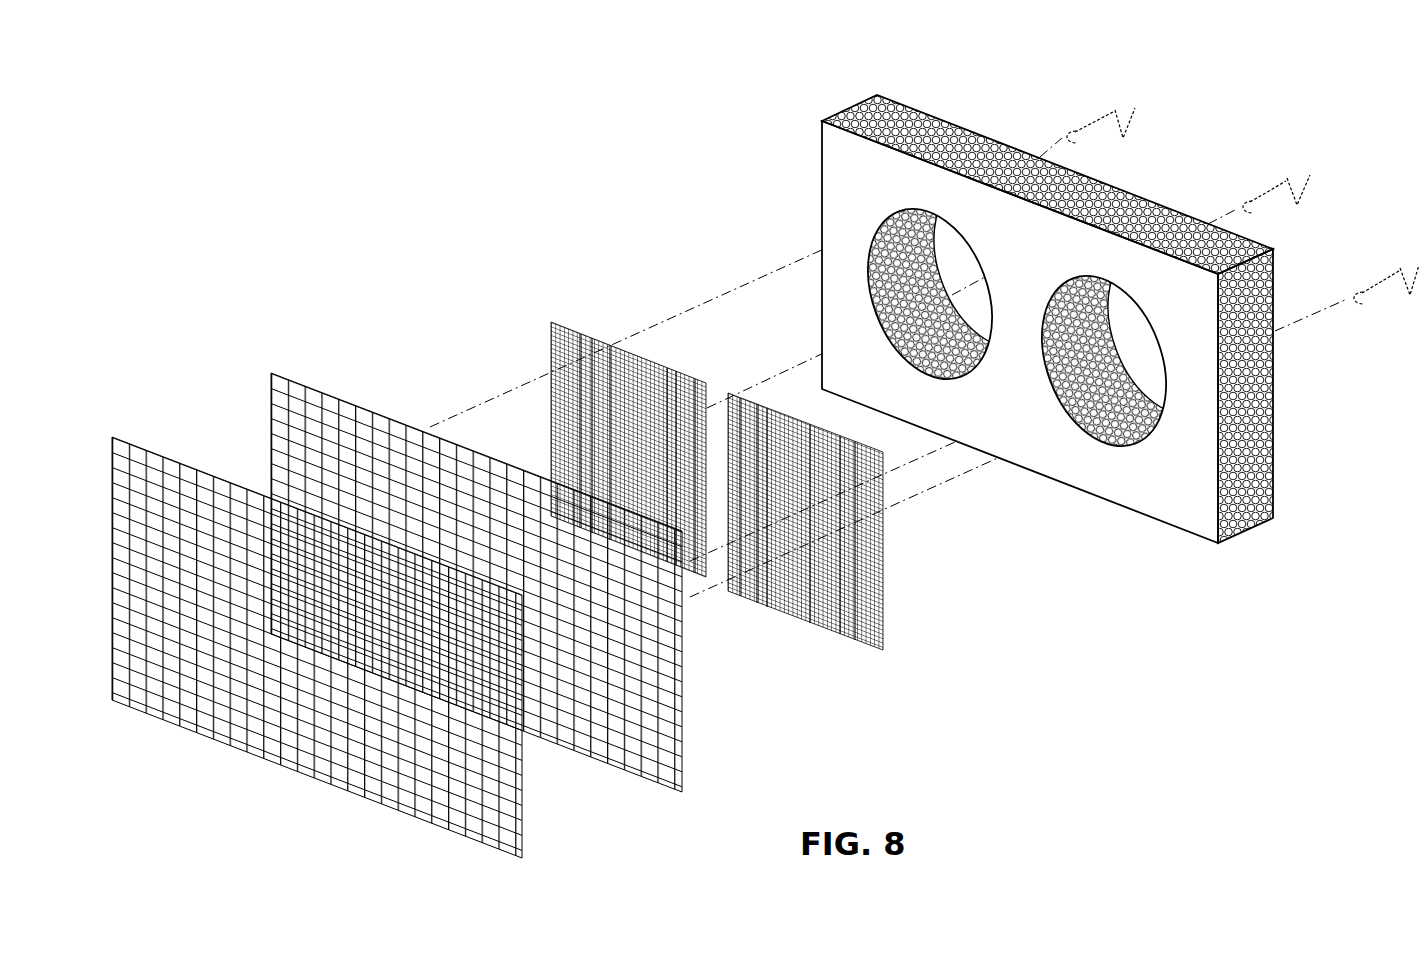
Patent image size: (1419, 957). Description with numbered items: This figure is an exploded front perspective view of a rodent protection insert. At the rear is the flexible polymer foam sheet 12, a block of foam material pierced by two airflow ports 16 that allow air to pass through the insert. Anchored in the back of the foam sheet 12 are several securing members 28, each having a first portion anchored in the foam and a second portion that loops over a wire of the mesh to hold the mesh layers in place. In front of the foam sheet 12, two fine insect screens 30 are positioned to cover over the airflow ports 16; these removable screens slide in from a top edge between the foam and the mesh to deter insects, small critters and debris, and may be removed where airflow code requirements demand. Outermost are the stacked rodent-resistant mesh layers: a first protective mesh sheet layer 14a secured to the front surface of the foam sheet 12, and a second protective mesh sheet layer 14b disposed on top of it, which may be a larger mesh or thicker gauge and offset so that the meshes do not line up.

The flexible polymer foam sheet 12 is at (1185, 530).
The first protective mesh sheet layer 14a is at (278, 417).
The second protective mesh sheet layer 14b is at (115, 455).
The airflow port 16 is at (948, 323).
The securing member 28 is at (1118, 112).
The insect screen 30 is at (758, 423).